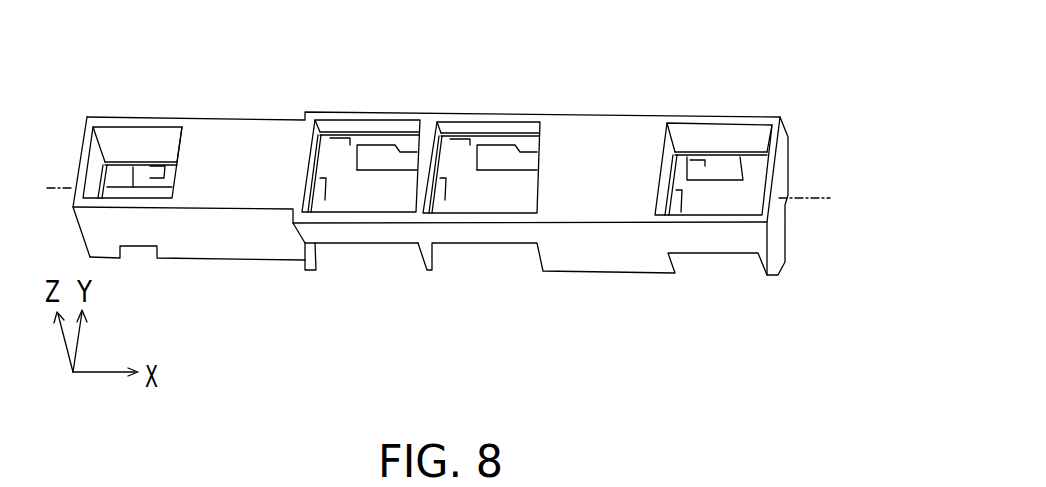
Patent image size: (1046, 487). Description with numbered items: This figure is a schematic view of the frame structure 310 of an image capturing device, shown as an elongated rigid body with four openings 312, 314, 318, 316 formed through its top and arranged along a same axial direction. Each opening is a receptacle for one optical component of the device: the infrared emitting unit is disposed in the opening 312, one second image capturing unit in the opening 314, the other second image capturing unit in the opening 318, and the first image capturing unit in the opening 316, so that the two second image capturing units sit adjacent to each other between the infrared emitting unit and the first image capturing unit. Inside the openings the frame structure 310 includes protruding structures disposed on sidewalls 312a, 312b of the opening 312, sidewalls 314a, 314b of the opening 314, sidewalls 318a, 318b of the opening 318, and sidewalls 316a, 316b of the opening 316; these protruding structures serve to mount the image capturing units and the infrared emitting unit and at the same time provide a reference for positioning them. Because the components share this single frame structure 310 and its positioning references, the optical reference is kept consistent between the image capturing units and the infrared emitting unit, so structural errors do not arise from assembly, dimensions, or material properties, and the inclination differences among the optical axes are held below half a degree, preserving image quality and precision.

The frame structure 310 is at (843, 58).
The opening 312 is at (132, 132).
The sidewall 312a is at (156, 172).
The sidewall 312b is at (112, 186).
The opening 314 is at (378, 183).
The sidewall 314a is at (340, 140).
The sidewall 314b is at (322, 172).
The opening 316 is at (712, 163).
The sidewall 316a is at (692, 162).
The sidewall 316b is at (680, 198).
The opening 318 is at (497, 183).
The sidewall 318a is at (458, 141).
The sidewall 318b is at (441, 172).